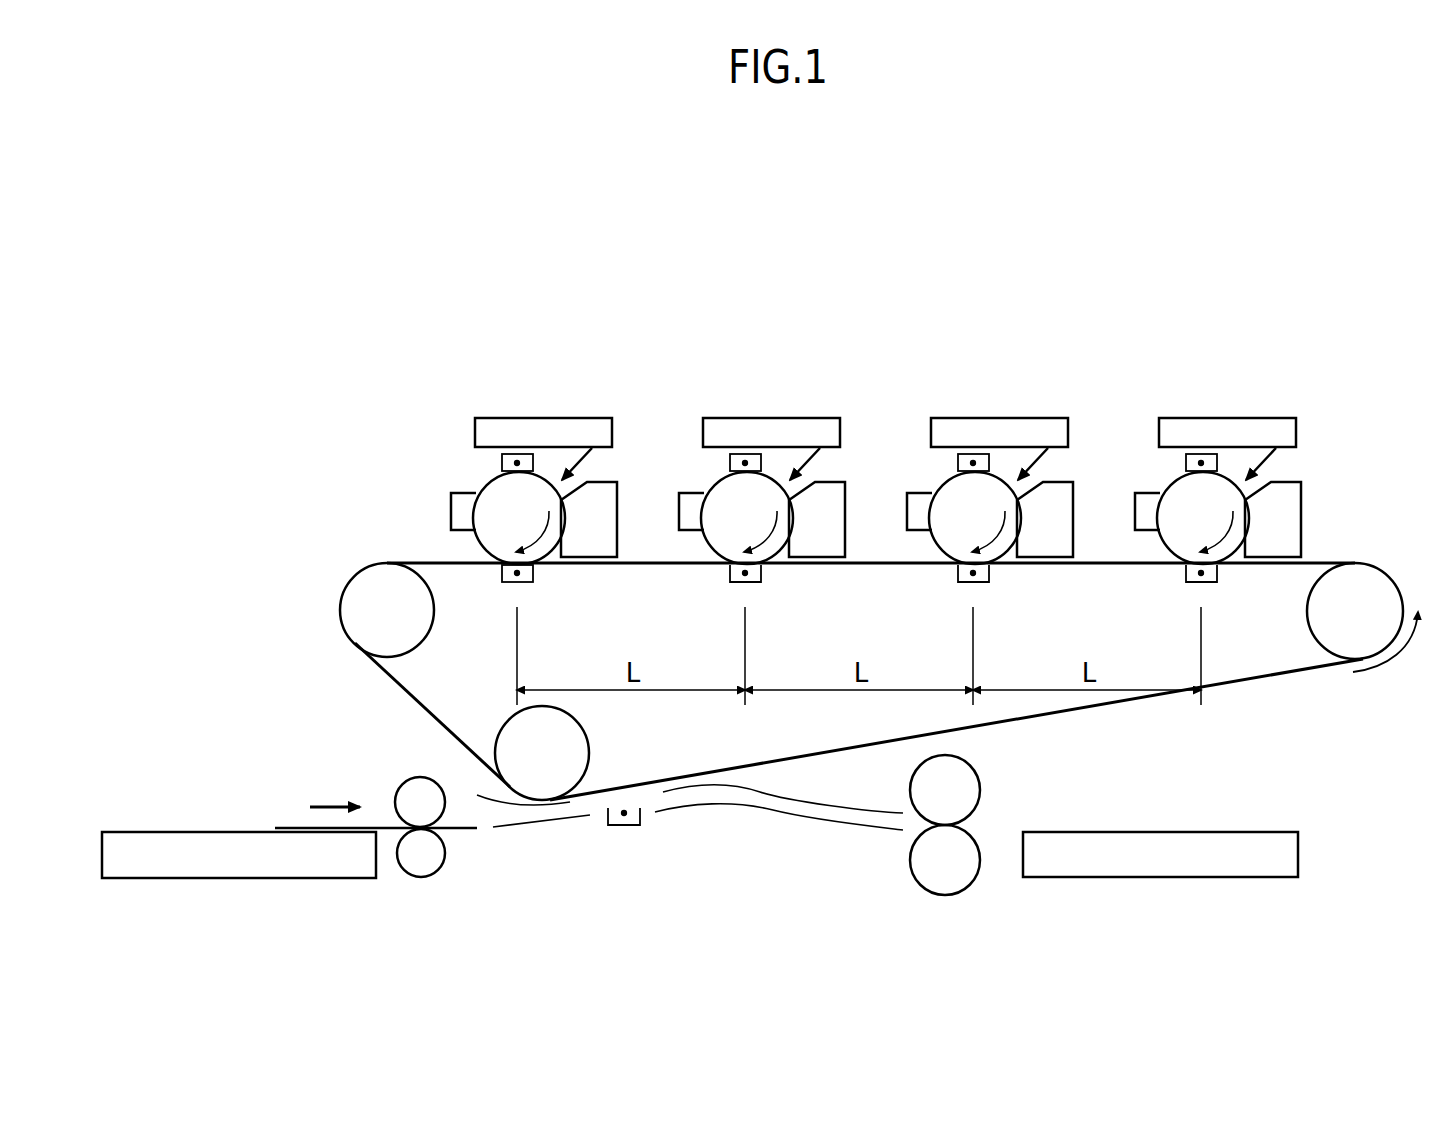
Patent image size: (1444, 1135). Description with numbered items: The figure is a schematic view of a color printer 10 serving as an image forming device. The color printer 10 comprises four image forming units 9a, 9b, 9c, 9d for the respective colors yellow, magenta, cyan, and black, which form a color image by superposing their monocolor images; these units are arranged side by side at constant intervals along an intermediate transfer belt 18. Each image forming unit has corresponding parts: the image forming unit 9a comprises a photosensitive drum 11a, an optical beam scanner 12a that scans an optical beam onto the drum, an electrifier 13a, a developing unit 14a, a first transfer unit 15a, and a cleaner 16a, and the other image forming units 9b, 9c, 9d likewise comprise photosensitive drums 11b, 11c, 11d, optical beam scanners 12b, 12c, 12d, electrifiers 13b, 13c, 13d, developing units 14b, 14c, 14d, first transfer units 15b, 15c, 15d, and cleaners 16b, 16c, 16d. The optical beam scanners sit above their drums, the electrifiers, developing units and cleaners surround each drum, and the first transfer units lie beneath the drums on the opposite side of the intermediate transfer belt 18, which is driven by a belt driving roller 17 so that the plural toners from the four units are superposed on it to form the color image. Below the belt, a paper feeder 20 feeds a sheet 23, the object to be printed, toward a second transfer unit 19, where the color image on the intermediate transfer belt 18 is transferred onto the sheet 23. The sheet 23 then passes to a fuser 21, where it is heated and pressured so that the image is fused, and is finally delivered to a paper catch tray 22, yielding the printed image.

The color printer 10 is at (1005, 187).
The image forming unit 9a is at (1228, 402).
The image forming unit 9b is at (986, 400).
The image forming unit 9c is at (748, 400).
The image forming unit 9d is at (520, 400).
The photosensitive drum 11a is at (1171, 482).
The photosensitive drum 11b is at (943, 482).
The photosensitive drum 11c is at (715, 482).
The photosensitive drum 11d is at (487, 482).
The optical beam scanner 12a is at (1257, 418).
The optical beam scanner 12b is at (1029, 418).
The optical beam scanner 12c is at (801, 418).
The optical beam scanner 12d is at (573, 418).
The electrifier 13a is at (1187, 462).
The electrifier 13b is at (959, 462).
The electrifier 13c is at (731, 462).
The electrifier 13d is at (503, 462).
The developing unit 14a is at (1274, 547).
The developing unit 14b is at (1046, 547).
The developing unit 14c is at (818, 547).
The developing unit 14d is at (590, 547).
The first transfer unit 15a is at (1193, 585).
The first transfer unit 15b is at (962, 580).
The first transfer unit 15c is at (736, 580).
The first transfer unit 15d is at (513, 583).
The cleaner 16a is at (1146, 505).
The cleaner 16b is at (918, 505).
The cleaner 16c is at (690, 505).
The cleaner 16d is at (462, 505).
The belt driving roller 17 is at (1355, 618).
The intermediate transfer belt 18 is at (993, 727).
The second transfer unit 19 is at (618, 827).
The paper feeder 20 is at (172, 832).
The fuser 21 is at (943, 895).
The paper catch tray 22 is at (1175, 832).
The sheet 23 is at (292, 828).